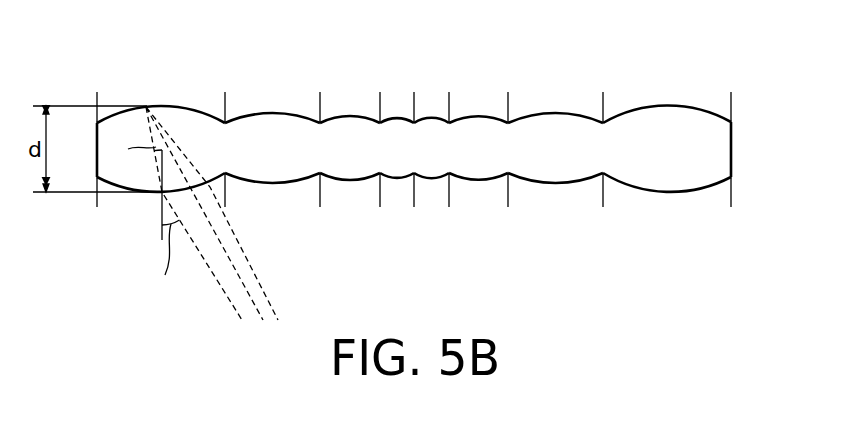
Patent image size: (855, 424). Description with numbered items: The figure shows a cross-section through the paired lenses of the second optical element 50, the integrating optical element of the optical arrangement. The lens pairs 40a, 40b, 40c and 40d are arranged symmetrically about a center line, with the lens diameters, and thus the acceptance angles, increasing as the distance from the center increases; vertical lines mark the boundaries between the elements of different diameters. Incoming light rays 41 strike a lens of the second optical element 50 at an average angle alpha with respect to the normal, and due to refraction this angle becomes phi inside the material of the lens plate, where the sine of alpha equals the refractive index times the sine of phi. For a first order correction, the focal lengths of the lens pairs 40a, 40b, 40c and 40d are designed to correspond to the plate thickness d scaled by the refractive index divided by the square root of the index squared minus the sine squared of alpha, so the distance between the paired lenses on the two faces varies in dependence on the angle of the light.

The lens pair 40a is at (397, 111).
The lens pair 40b is at (350, 109).
The lens pair 40c is at (273, 106).
The lens pair 40d is at (162, 105).
The light rays 41 is at (200, 252).
The second optical element 50 is at (414, 134).